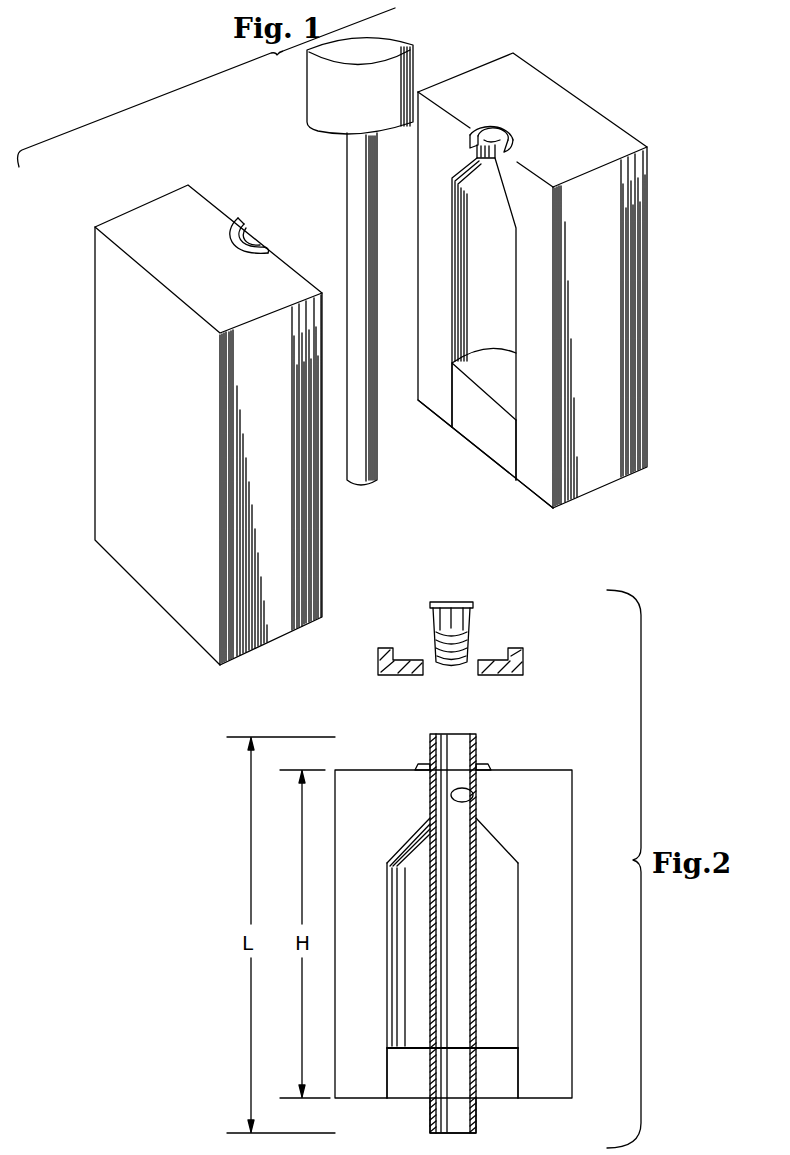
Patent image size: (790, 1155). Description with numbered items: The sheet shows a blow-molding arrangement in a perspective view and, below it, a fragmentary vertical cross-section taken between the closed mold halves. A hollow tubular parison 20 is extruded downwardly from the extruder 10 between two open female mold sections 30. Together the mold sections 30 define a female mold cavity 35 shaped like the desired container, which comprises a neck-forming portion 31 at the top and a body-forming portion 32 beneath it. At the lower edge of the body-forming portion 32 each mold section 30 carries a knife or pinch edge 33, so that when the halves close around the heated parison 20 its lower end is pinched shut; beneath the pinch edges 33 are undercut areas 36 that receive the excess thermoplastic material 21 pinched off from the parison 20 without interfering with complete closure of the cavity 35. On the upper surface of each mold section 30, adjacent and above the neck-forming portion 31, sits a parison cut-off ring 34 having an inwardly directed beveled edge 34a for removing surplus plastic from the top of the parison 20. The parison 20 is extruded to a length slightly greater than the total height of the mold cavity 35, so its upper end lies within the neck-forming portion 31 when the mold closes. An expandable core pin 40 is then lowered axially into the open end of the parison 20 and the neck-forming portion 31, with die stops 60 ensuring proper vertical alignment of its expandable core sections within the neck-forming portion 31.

In FIG. 1, the extruder 10 is at (413, 64).
In FIG. 1, the hollow tubular parison 20 is at (348, 162).
In FIG. 2, the hollow tubular parison 20 is at (478, 746).
In FIG. 2, the excess thermoplastic material 21 is at (477, 1086).
In FIG. 1, the female mold section 30 is at (141, 609).
In FIG. 1, the neck-forming portion 31 is at (478, 151).
In FIG. 2, the neck-forming portion 31 is at (472, 797).
In FIG. 1, the body-forming portion 32 is at (484, 292).
In FIG. 2, the body-forming portion 32 is at (498, 945).
In FIG. 1, the pinch edge 33 is at (478, 385).
In FIG. 2, the pinch edge 33 is at (415, 1049).
In FIG. 1, the parison cut-off ring 34 is at (268, 246).
In FIG. 2, the parison cut-off ring 34 is at (487, 765).
In FIG. 1, the beveled edge 34a is at (244, 228).
In FIG. 1, the female mold cavity 35 is at (461, 457).
In FIG. 2, the female mold cavity 35 is at (582, 860).
In FIG. 1, the undercut area 36 is at (502, 440).
In FIG. 2, the undercut area 36 is at (502, 1070).
In FIG. 1, the expandable core pin 40 is at (482, 619).
In FIG. 1, the die stop 60 is at (512, 653).